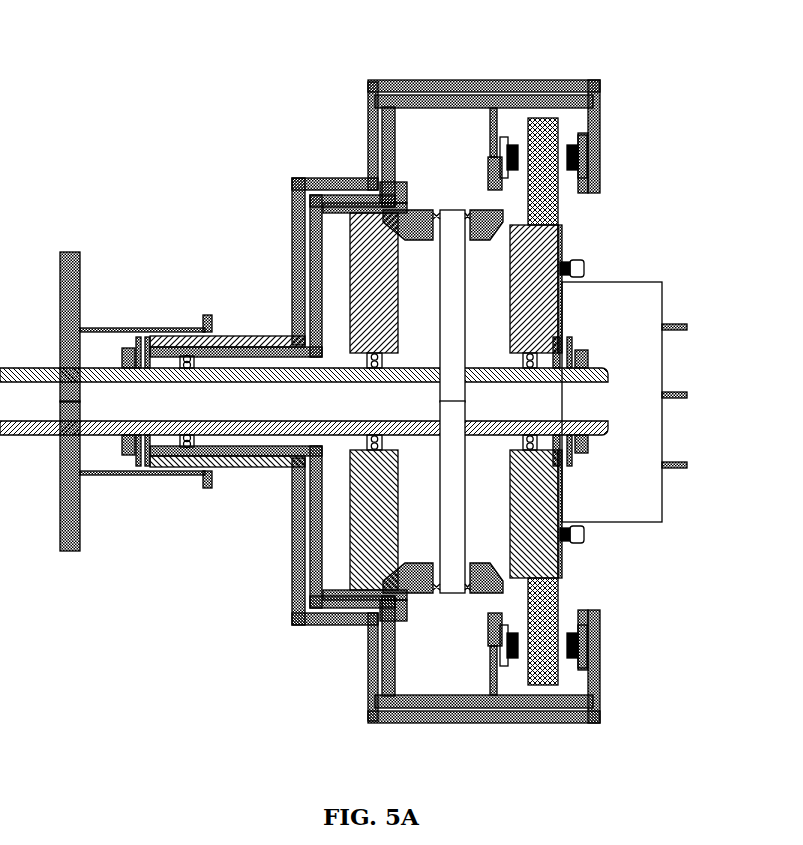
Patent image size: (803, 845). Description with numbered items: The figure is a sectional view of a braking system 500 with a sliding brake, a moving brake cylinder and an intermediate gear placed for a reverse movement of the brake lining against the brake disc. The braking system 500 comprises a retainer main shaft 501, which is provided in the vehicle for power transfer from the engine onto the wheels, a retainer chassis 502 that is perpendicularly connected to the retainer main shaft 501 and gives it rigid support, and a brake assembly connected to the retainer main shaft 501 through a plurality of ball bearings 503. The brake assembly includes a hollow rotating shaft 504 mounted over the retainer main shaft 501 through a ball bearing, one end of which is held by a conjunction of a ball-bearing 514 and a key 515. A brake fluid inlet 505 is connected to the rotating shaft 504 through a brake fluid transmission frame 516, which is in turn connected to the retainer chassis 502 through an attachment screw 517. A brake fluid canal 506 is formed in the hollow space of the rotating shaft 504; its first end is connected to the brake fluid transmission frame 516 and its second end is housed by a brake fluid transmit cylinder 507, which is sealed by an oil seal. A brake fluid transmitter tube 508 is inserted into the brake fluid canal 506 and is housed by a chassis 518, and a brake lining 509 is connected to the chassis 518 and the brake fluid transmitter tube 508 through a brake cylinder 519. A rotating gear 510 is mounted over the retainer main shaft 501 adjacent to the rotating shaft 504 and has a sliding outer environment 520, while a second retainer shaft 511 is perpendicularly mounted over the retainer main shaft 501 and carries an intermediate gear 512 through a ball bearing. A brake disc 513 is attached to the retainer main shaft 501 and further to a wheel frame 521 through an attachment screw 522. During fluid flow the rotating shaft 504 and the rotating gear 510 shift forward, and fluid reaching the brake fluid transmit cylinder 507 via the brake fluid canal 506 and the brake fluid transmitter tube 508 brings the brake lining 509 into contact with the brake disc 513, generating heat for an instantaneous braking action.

The braking system 500 is at (198, 119).
The retainer main shaft 501 is at (15, 436).
The retainer chassis 502 is at (70, 550).
The ball bearings 503 is at (192, 444).
The rotating shaft 504 is at (258, 336).
The brake fluid inlet 505 is at (205, 316).
The brake fluid canal 506 is at (242, 460).
The brake fluid transmit cylinder 507 is at (368, 664).
The brake fluid transmitter tube 508 is at (453, 90).
The brake lining 509 is at (570, 150).
The rotating gear 510 is at (350, 268).
The second retainer shaft 511 is at (463, 547).
The intermediate gear 512 is at (500, 214).
The brake disc 513 is at (550, 602).
The ball-bearing 514 is at (148, 452).
The key 515 is at (128, 452).
The brake fluid transmission frame 516 is at (200, 328).
The attachment screw 517 is at (85, 318).
The chassis 518 is at (417, 82).
The brake cylinder 519 is at (590, 157).
The sliding outer environment 520 is at (373, 209).
The wheel frame 521 is at (583, 537).
The attachment screw 522 is at (687, 466).